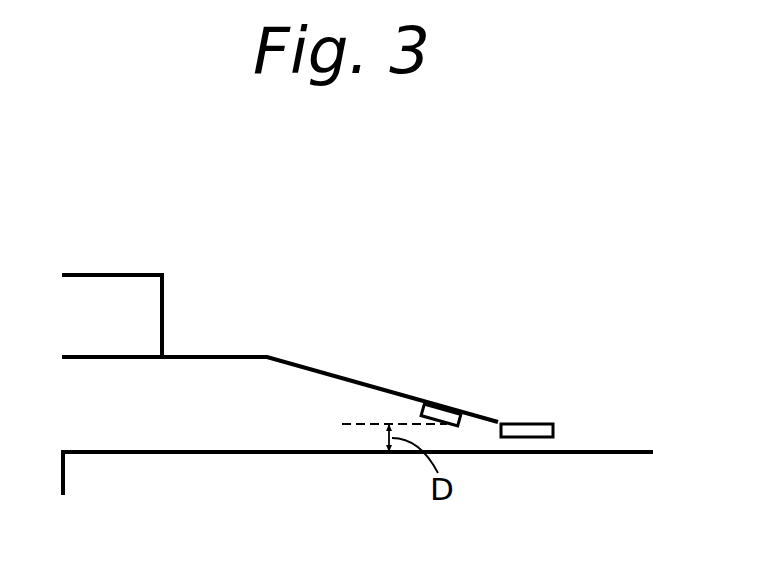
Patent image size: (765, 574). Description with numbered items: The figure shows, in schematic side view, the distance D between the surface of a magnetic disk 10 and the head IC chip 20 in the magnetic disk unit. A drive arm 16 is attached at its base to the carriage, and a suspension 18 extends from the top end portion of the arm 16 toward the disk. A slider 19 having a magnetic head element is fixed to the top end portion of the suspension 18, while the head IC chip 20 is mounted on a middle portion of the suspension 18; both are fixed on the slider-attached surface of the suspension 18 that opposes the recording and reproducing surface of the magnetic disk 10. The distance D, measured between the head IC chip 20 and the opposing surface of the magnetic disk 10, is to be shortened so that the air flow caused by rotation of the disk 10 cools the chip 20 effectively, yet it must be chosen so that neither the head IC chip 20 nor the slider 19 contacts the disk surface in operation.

The magnetic disk 10 is at (592, 477).
The drive arm 16 is at (137, 290).
The suspension 18 is at (298, 363).
The slider 19 is at (523, 426).
The head IC chip 20 is at (438, 407).